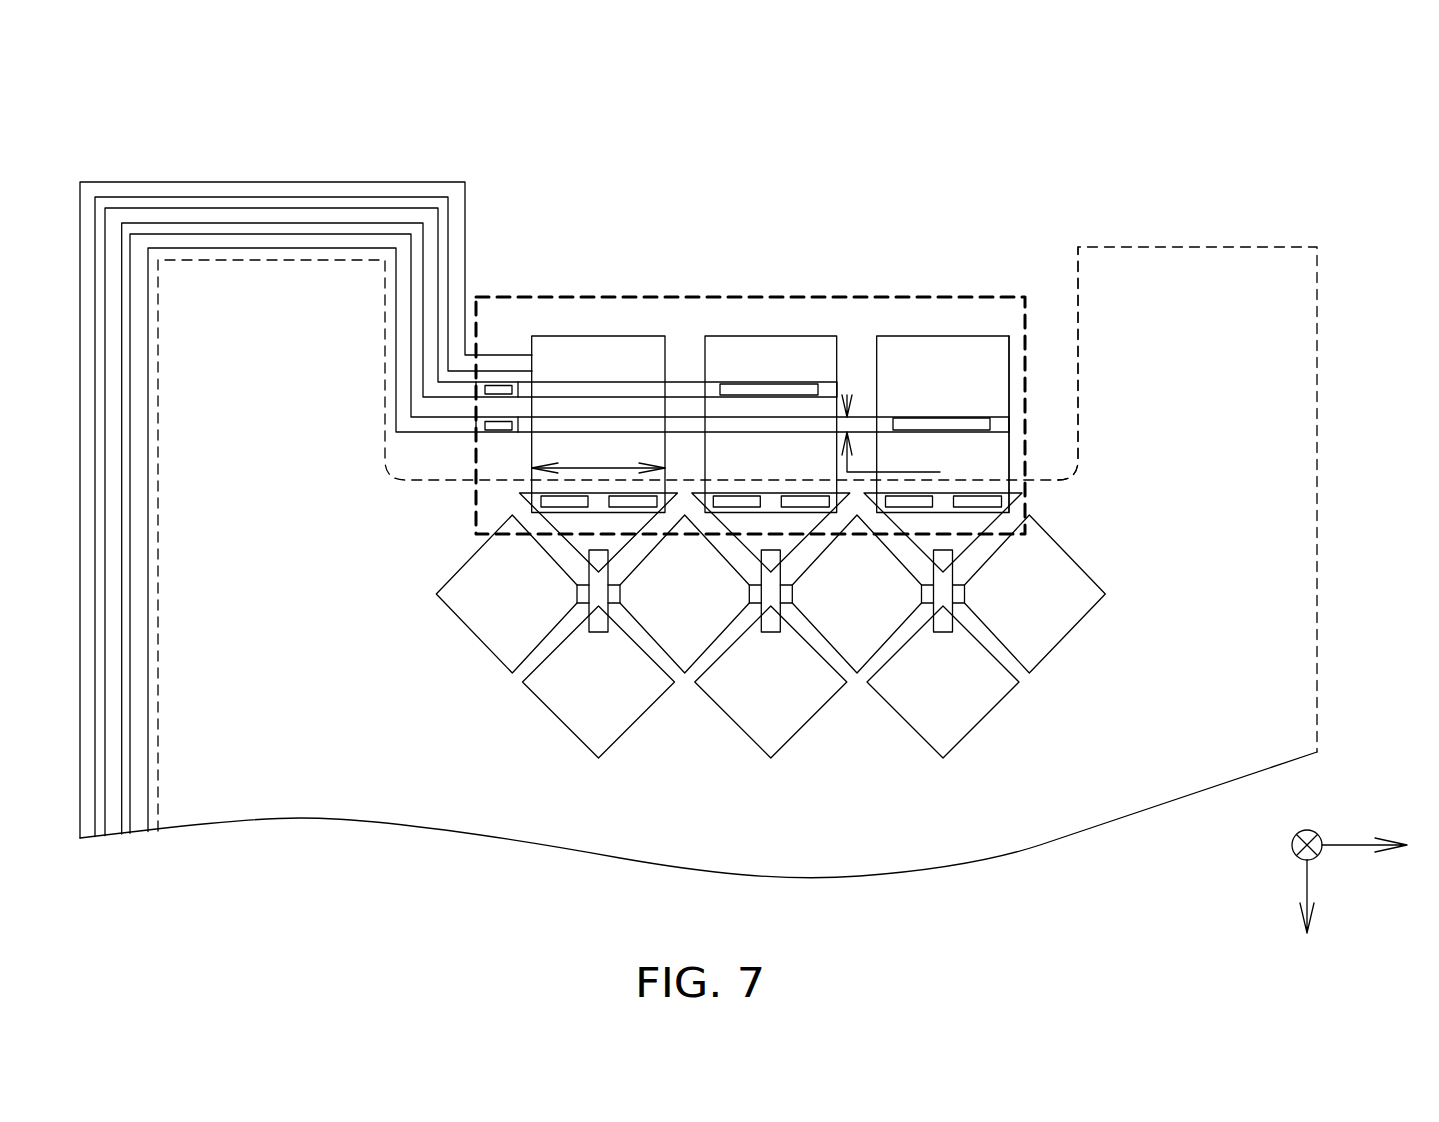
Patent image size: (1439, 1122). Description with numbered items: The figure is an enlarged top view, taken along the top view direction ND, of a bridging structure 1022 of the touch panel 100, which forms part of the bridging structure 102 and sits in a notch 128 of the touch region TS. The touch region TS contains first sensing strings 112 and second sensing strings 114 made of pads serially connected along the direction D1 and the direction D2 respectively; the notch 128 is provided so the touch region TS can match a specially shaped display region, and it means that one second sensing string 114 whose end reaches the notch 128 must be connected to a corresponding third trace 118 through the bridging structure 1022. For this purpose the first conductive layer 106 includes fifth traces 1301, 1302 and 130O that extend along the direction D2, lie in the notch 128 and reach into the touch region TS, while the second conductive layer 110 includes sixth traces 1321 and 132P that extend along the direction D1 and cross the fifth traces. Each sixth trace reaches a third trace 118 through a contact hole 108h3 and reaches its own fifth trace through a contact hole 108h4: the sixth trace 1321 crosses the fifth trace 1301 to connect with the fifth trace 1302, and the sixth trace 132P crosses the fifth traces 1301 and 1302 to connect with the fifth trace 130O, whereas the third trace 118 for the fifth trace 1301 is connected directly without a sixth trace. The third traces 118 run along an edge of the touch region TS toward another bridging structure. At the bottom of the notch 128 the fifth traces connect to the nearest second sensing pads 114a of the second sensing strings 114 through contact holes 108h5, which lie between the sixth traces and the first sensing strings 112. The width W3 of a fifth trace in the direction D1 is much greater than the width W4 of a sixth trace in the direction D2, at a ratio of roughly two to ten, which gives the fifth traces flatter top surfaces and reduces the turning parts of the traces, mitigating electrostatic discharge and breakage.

The touch panel 100 is at (1248, 168).
The bridging structure 102 is at (897, 295).
The bridging structure 1022 is at (750, 348).
The first conductive layer 106 is at (1010, 356).
The contact holes 108h3 is at (485, 388).
The contact holes 108h4 is at (808, 385).
The contact holes 108h5 is at (540, 502).
The second conductive layer 110 is at (540, 700).
The first sensing strings 112 is at (1050, 600).
The second sensing strings 114 is at (592, 692).
The second sensing pads 114a is at (618, 545).
The third traces 118 is at (140, 190).
The notch 128 is at (1008, 260).
The fifth trace 1301 is at (567, 350).
The fifth trace 1302 is at (722, 350).
The fifth trace 130O is at (943, 352).
The sixth trace 1321 is at (627, 385).
The sixth trace 132P is at (783, 425).
The touch region TS is at (1242, 362).
The width W3 is at (598, 456).
The width W4 is at (891, 434).
The top view direction ND is at (1305, 827).
The direction D1 is at (1373, 828).
The direction D2 is at (1305, 915).